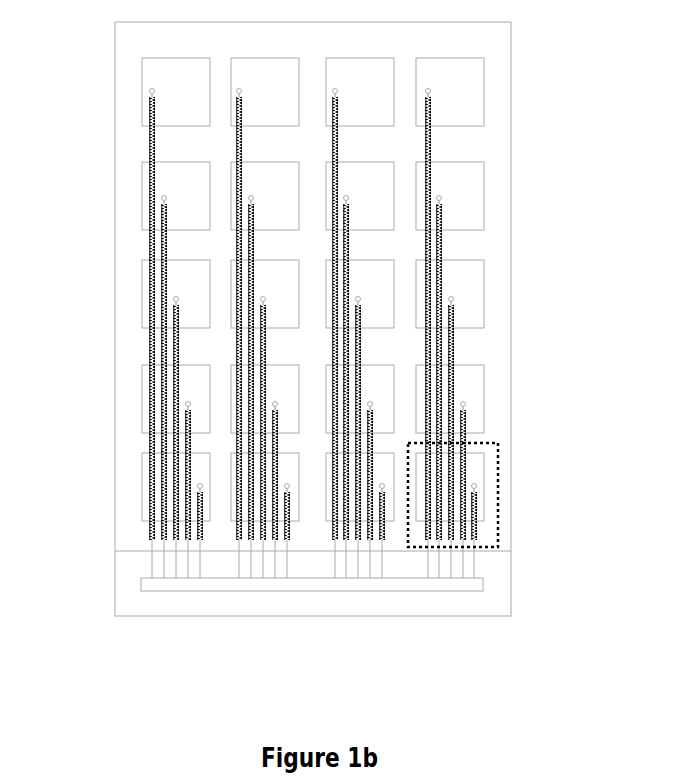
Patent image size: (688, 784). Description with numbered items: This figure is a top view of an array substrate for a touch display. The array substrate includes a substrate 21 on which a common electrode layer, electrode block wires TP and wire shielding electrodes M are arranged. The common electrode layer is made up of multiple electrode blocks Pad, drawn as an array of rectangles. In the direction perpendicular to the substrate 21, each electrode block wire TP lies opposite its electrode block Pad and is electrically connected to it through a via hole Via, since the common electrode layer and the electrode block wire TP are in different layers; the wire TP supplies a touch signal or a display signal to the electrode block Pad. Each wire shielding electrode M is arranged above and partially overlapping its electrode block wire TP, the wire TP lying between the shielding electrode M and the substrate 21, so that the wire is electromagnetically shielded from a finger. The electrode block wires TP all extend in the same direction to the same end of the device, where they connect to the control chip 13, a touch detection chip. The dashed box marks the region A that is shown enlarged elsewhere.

The electrode block Pad is at (488, 75).
The via hole Via is at (458, 189).
The wire shielding electrode M is at (473, 346).
The region A is at (516, 489).
The substrate 21 is at (526, 585).
The electrode block wire TP is at (133, 563).
The control chip 13 is at (360, 609).